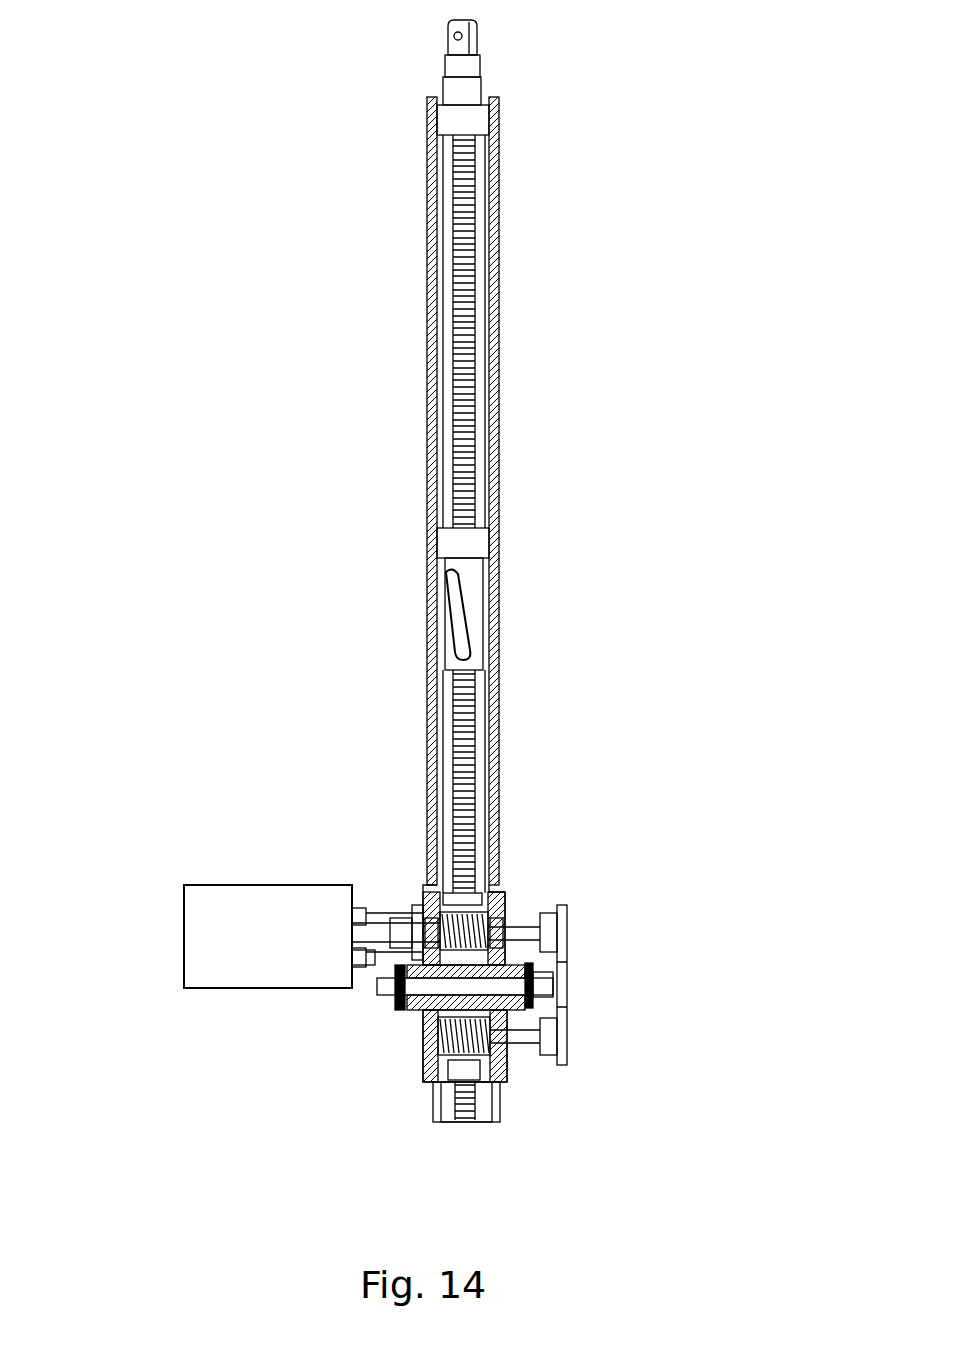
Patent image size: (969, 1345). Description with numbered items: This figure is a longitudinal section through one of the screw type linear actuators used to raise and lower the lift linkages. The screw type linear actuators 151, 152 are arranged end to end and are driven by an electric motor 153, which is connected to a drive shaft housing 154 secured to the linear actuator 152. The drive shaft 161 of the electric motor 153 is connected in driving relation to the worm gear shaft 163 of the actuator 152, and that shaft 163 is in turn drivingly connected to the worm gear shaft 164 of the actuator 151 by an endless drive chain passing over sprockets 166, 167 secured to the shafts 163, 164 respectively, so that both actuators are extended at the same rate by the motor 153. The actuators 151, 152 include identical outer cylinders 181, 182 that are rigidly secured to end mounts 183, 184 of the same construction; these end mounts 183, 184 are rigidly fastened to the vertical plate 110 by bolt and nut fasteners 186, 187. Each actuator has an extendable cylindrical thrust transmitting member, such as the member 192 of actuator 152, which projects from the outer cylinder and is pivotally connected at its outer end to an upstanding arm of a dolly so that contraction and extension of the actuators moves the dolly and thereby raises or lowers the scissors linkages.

The vertical plate 110 is at (387, 988).
The screw type linear actuator 151 is at (500, 1108).
The screw type linear actuator 152 is at (428, 455).
The electric motor 153 is at (208, 898).
The drive shaft housing 154 is at (382, 910).
The drive shaft 161 is at (362, 960).
The worm gear shaft 163 is at (505, 905).
The worm gear shaft 164 is at (519, 1042).
The sprocket 166 is at (562, 938).
The sprocket 167 is at (562, 1056).
The outer cylinder 181 is at (433, 1108).
The outer cylinder 182 is at (428, 264).
The end mount 183 is at (422, 1065).
The end mount 184 is at (520, 932).
The bolt and nut fastener 186 is at (407, 1012).
The bolt and nut fastener 187 is at (566, 983).
The cylindrical thrust transmitting member 192 is at (469, 94).